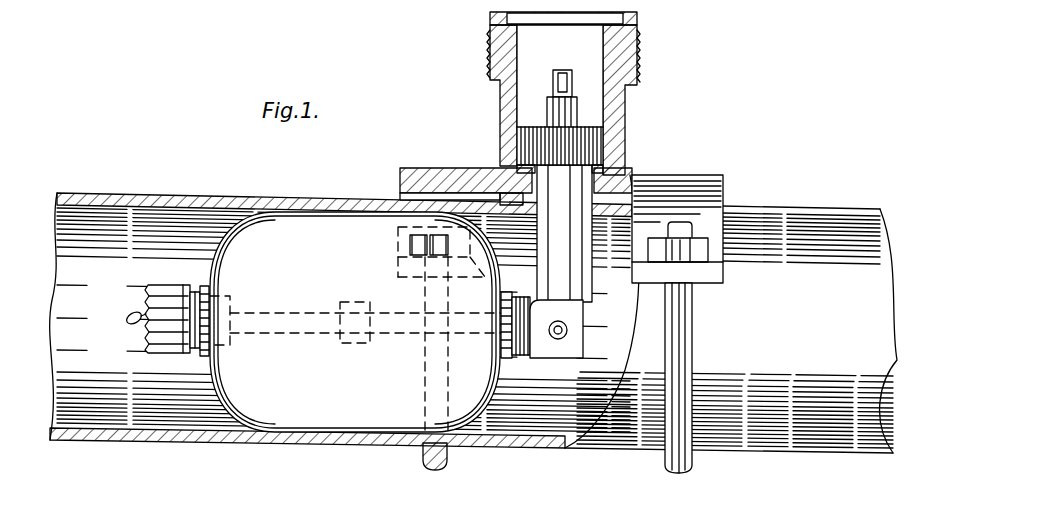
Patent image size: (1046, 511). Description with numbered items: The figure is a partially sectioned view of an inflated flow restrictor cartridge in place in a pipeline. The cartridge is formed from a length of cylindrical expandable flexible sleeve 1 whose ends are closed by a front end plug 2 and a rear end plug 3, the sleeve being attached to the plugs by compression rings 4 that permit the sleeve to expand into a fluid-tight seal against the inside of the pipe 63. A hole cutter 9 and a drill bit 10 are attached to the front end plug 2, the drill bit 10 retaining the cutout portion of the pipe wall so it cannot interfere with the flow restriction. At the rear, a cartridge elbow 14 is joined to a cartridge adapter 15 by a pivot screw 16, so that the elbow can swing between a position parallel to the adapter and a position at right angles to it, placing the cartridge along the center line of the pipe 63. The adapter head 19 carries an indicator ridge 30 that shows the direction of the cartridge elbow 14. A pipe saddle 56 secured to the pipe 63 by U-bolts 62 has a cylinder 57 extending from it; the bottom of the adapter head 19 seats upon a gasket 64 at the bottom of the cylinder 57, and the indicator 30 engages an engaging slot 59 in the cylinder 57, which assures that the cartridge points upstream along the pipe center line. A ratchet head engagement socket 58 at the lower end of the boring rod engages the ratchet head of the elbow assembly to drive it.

The expandable flexible sleeve 1 is at (331, 212).
The front end plug 2 is at (196, 350).
The rear end plug 3 is at (521, 358).
The compression rings 4 is at (205, 358).
The hole cutter 9 is at (152, 352).
The drill bit 10 is at (132, 313).
The cartridge elbow 14 is at (542, 362).
The cartridge adapter 15 is at (583, 242).
The pivot screw 16 is at (567, 330).
The adapter head 19 is at (594, 147).
The indicator ridge 30 is at (518, 137).
The pipe saddle 56 is at (700, 180).
The cylinder 57 is at (508, 96).
The ratchet head engagement socket 58 is at (595, 100).
The engaging slot 59 is at (517, 33).
The U-bolts 62 is at (422, 459).
The pipe 63 is at (167, 196).
The gasket 64 is at (516, 164).